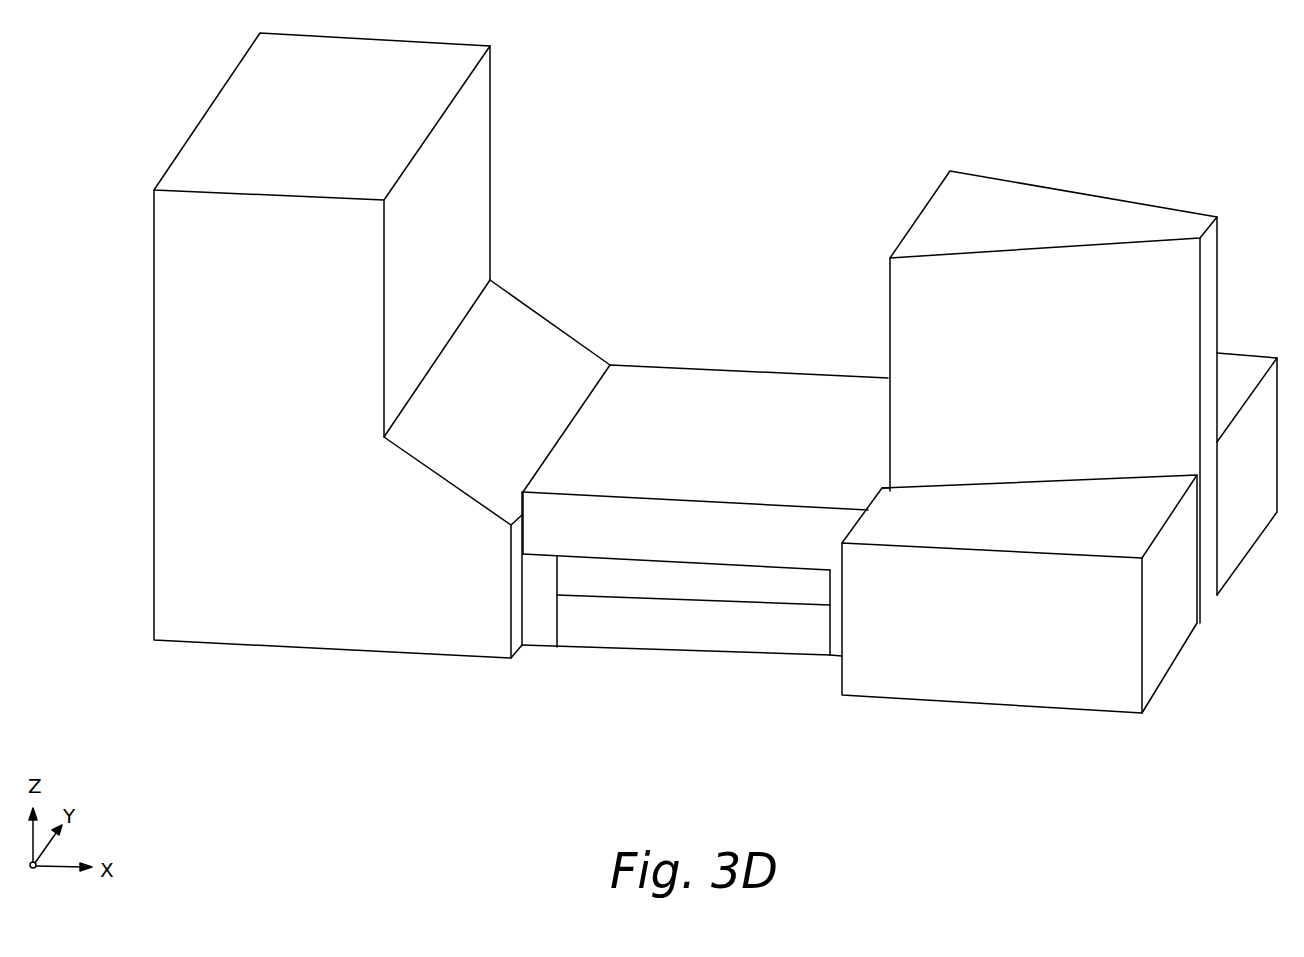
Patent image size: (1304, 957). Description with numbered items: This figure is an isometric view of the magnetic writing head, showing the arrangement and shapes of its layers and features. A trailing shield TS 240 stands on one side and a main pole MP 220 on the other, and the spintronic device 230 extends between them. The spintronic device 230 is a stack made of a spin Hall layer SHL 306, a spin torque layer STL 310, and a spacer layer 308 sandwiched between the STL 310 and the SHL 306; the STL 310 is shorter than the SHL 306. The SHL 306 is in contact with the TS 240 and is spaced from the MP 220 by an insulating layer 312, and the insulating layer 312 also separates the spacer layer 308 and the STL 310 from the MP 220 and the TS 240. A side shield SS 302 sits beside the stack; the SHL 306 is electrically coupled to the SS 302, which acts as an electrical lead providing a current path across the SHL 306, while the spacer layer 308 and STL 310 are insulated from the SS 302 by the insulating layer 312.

The trailing shield 240 is at (288, 373).
The main pole 220 is at (1064, 395).
The side shield 302 is at (1011, 655).
The spintronic device 230 is at (736, 581).
The spin Hall layer 306 is at (684, 545).
The spacer layer 308 is at (684, 592).
The spin torque layer 310 is at (684, 637).
The insulating layer 312 is at (888, 487).